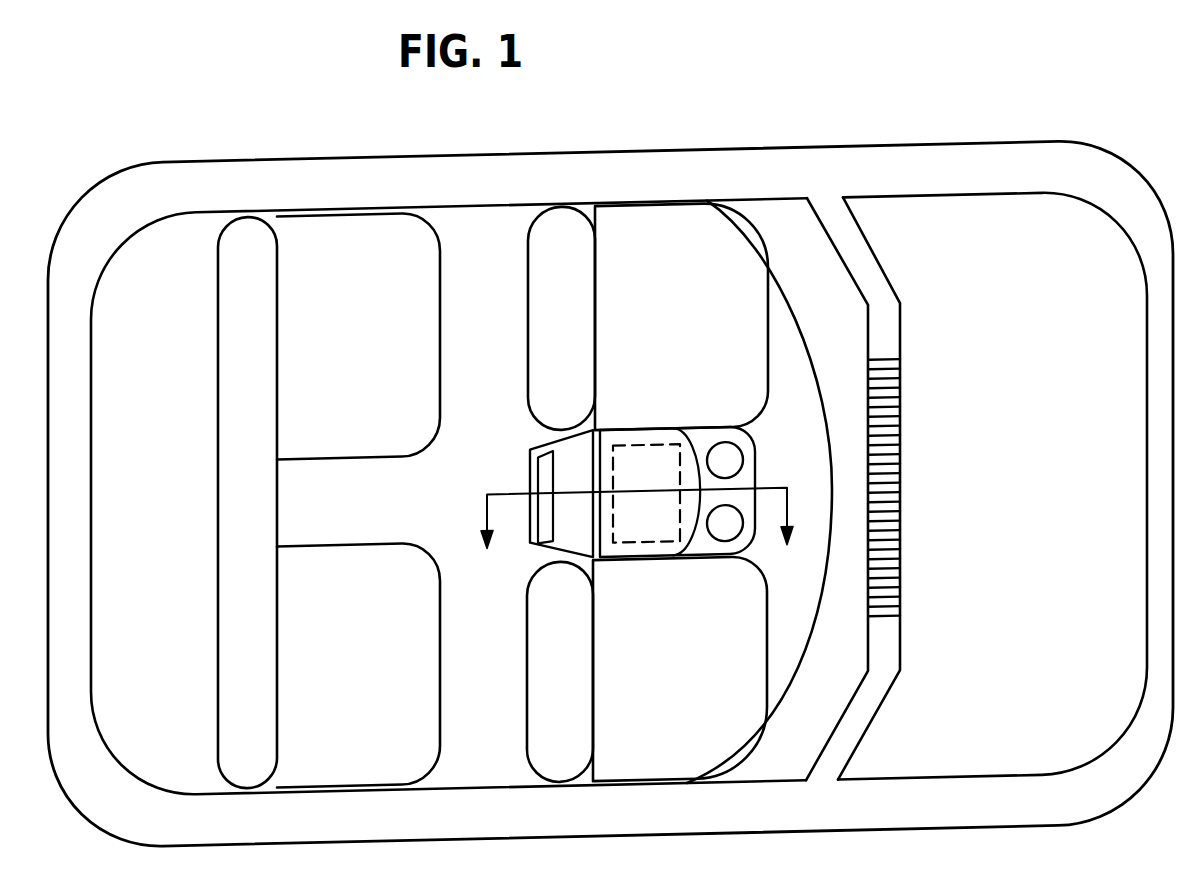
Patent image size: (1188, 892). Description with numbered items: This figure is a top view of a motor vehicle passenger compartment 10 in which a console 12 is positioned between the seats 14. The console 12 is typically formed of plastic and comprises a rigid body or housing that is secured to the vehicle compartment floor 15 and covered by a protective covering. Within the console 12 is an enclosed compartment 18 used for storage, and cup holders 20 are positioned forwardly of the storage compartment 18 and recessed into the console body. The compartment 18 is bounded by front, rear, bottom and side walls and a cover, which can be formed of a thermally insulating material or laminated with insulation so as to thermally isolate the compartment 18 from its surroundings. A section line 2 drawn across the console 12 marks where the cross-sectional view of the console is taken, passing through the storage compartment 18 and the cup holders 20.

The motor vehicle passenger compartment 10 is at (478, 252).
The console 12 is at (673, 497).
The seats 14 is at (652, 229).
The vehicle compartment floor 15 is at (788, 366).
The enclosed compartment 18 is at (643, 447).
The cup holders 20 is at (730, 461).
The section line 2- 2 is at (636, 524).